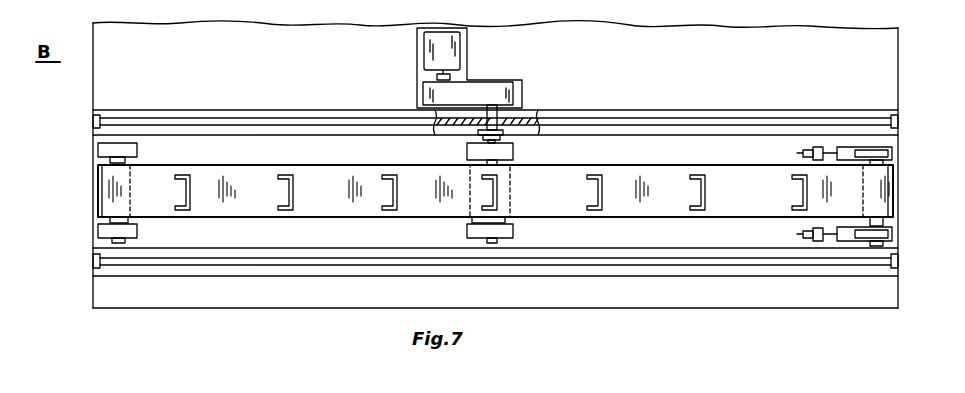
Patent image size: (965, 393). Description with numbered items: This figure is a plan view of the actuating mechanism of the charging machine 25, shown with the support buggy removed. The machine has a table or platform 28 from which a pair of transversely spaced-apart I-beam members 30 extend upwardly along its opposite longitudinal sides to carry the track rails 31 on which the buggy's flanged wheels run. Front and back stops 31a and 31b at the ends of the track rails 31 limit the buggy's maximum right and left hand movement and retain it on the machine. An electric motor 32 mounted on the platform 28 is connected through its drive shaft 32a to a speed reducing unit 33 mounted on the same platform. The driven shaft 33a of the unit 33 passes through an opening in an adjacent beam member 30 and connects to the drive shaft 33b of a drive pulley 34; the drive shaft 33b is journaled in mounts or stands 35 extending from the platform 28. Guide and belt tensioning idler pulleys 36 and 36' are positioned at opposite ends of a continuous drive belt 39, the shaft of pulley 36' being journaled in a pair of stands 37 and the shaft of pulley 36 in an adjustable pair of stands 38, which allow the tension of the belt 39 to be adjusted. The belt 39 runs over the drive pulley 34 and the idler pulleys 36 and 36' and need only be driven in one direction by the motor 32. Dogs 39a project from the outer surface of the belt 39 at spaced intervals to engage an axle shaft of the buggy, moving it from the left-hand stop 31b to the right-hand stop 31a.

The charging machine 25 is at (756, 24).
The table or platform 28 is at (898, 70).
The I-beam members 30 is at (788, 98).
The track rails 31 is at (718, 117).
The front stop 31a is at (890, 114).
The back stop 31b is at (99, 115).
The electric motor 32 is at (424, 48).
The drive shaft 32a is at (437, 76).
The speed reducing unit 33 is at (495, 92).
The driven shaft 33a is at (525, 117).
The drive shaft 33b is at (500, 243).
The drive pulley 34 is at (512, 165).
The mounts or stands 35 is at (467, 152).
The guide and belt tensioning idler pulley 36 is at (900, 191).
The guide and belt tensioning idler pulley 36' is at (90, 181).
The stands 37 is at (137, 150).
The adjustable stands 38 is at (892, 153).
The continuous drive belt 39 is at (238, 176).
The dogs 39a is at (300, 180).